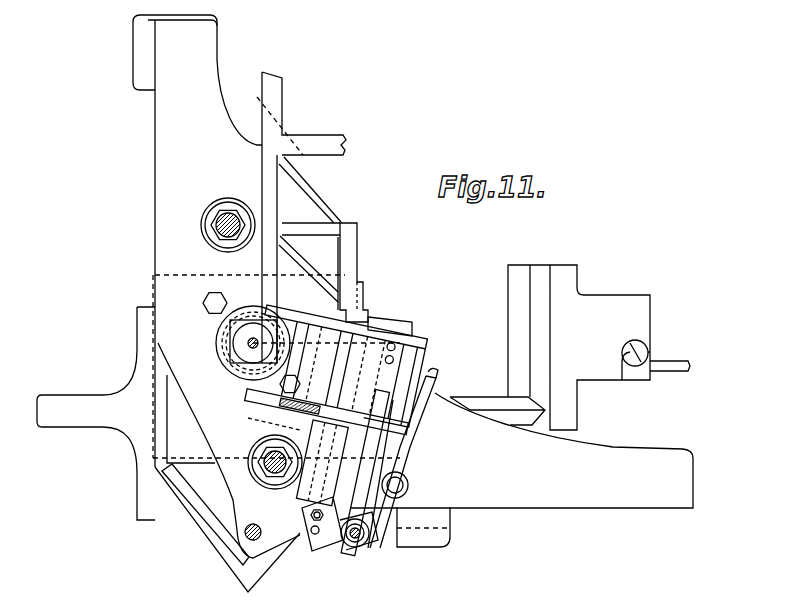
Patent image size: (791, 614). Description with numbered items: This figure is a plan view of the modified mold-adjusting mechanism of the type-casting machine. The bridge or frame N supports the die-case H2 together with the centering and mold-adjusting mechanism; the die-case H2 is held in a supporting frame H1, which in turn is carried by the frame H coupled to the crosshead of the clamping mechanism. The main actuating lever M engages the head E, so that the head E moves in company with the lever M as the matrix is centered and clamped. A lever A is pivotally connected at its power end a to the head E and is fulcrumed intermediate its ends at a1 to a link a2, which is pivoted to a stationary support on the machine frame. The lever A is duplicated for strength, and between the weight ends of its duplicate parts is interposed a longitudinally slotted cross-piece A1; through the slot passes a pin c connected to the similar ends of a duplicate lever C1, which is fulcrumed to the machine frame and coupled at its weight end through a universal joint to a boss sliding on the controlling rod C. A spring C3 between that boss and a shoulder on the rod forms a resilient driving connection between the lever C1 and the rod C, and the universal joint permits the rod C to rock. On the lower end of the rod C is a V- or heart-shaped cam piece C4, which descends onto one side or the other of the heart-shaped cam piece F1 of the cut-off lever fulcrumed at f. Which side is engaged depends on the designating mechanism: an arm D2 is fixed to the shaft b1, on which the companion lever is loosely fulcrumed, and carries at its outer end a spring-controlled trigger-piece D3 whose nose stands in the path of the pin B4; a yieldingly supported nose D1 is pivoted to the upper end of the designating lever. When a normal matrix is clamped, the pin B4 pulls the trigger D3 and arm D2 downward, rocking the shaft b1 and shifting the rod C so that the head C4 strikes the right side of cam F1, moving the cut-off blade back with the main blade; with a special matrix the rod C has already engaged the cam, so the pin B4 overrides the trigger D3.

The bridge or frame N is at (266, 241).
The main actuating lever M is at (328, 272).
The frame H is at (208, 527).
The supporting frame H1 is at (140, 487).
The die-case H2 is at (487, 400).
The head E is at (225, 338).
The lever A is at (338, 364).
The longitudinally slotted cross-piece A1 is at (430, 365).
The power end a is at (252, 303).
The fulcrum a1 is at (363, 295).
The link a2 is at (370, 308).
The pin B4 is at (250, 398).
The projecting piece or nose D1 is at (322, 463).
The arm D2 is at (230, 450).
The spring-controlled projection or trigger-piece D3 is at (259, 427).
The pivot or shaft b1 is at (325, 580).
The pin c is at (355, 548).
The controlling member or rod C is at (436, 395).
The duplicate lever C1 is at (395, 482).
The spring C3 is at (388, 548).
The cam piece C4 is at (360, 547).
The fulcrum f is at (415, 441).
The heart-shaped cam piece F1 is at (521, 470).